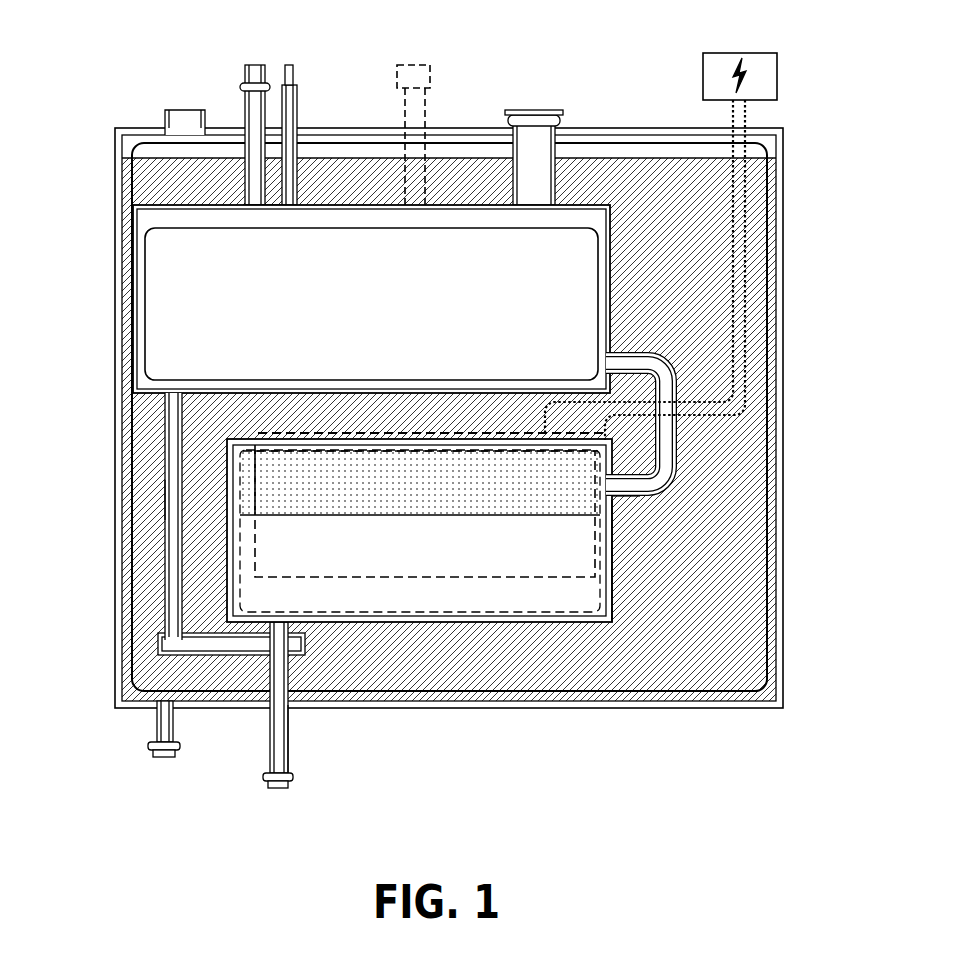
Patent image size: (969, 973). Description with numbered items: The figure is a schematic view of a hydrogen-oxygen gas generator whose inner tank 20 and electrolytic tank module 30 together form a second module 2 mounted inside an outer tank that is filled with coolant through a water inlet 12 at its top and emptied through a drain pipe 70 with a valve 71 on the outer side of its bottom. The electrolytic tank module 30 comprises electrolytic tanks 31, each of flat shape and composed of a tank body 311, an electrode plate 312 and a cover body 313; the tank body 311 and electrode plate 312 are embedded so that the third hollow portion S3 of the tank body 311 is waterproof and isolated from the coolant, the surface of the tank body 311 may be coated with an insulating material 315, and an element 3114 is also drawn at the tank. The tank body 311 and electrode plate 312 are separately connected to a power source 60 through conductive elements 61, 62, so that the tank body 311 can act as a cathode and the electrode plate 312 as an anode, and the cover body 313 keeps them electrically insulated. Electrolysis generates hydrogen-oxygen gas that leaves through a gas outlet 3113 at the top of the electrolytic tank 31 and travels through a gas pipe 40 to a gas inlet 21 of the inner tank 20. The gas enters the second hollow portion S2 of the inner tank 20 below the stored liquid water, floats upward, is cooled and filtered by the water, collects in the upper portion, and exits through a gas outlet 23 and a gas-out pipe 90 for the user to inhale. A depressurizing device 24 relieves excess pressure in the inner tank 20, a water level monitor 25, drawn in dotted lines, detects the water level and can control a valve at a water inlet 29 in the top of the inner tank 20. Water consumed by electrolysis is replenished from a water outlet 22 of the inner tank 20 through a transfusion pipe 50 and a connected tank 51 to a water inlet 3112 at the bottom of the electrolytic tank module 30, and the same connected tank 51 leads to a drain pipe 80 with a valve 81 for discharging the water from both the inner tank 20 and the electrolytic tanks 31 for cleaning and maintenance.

The second module 2 is at (90, 27).
The water inlet 12 is at (182, 110).
The gas-out pipe 90 is at (246, 95).
The gas outlet 23 is at (246, 203).
The depressurizing device 24 is at (285, 67).
The water inlet 29 is at (517, 206).
The water level monitor 25 is at (398, 70).
The inner tank 20 is at (133, 320).
The second hollow portion S2 is at (298, 378).
The connected tank 51 is at (158, 636).
The water outlet 22 is at (180, 396).
The transfusion pipe 50 is at (165, 500).
The water inlet 3112 is at (290, 628).
The drain pipe 80 is at (290, 738).
The valve 81 is at (292, 780).
The drain pipe 70 is at (175, 710).
The valve 71 is at (176, 752).
The electrolytic tank module 30 is at (440, 618).
The electrolytic tank 31 is at (545, 618).
The insulating material 315 is at (612, 600).
The third hollow portion S3 is at (380, 618).
The tank body 311 is at (243, 517).
The chamber side plate 3114 is at (258, 450).
The cover body 313 is at (345, 452).
The electrode plate 312 is at (410, 434).
The gas pipe 40 is at (678, 470).
The gas inlet 21 is at (624, 353).
The gas outlet 3113 is at (630, 493).
The power source 60 is at (703, 70).
The conductive element 61 is at (736, 296).
The conductive element 62 is at (748, 322).